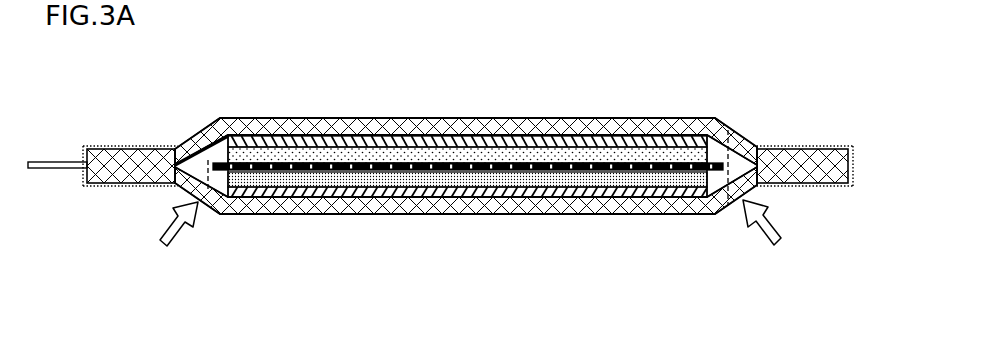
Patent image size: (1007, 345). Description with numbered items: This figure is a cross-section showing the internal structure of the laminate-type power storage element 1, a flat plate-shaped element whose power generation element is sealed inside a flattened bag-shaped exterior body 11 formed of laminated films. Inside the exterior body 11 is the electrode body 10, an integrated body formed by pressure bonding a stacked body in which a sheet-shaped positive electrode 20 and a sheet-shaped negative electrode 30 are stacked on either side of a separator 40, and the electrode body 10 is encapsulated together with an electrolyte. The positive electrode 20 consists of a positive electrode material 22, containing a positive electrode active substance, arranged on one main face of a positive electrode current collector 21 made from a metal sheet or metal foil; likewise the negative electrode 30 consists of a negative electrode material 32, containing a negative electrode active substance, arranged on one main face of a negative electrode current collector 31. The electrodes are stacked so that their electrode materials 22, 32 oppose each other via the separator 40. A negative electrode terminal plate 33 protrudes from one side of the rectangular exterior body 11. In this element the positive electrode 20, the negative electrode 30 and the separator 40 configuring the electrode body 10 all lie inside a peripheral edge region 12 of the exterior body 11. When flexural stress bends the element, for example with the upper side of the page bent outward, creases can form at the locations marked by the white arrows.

The laminate-type power storage element 1 is at (674, 62).
The electrode body 10 is at (245, 214).
The exterior body 11 is at (548, 125).
The peripheral edge region 12 is at (120, 187).
The positive electrode 20 is at (474, 258).
The positive electrode current collector 21 is at (633, 192).
The positive electrode material 22 is at (665, 172).
The negative electrode 30 is at (467, 84).
The negative electrode current collector 31 is at (312, 140).
The negative electrode material 32 is at (343, 158).
The negative electrode terminal plate 33 is at (56, 162).
The separator 40 is at (727, 205).